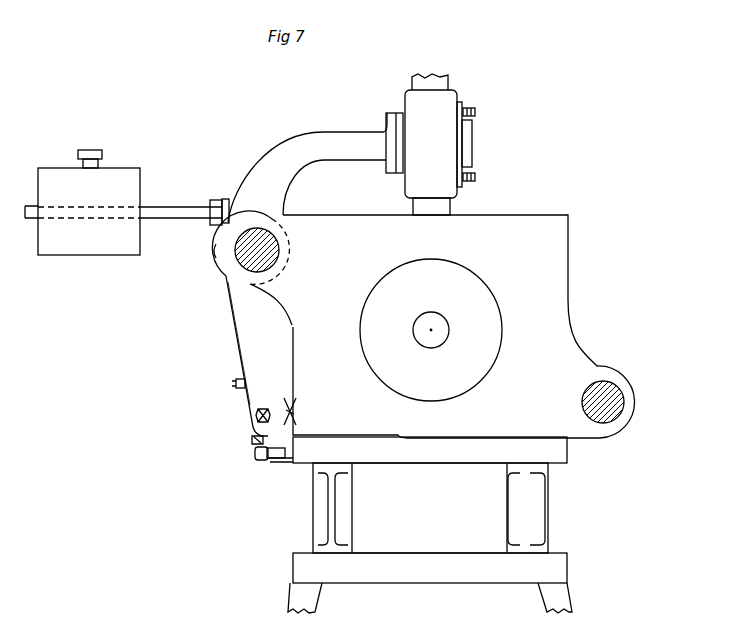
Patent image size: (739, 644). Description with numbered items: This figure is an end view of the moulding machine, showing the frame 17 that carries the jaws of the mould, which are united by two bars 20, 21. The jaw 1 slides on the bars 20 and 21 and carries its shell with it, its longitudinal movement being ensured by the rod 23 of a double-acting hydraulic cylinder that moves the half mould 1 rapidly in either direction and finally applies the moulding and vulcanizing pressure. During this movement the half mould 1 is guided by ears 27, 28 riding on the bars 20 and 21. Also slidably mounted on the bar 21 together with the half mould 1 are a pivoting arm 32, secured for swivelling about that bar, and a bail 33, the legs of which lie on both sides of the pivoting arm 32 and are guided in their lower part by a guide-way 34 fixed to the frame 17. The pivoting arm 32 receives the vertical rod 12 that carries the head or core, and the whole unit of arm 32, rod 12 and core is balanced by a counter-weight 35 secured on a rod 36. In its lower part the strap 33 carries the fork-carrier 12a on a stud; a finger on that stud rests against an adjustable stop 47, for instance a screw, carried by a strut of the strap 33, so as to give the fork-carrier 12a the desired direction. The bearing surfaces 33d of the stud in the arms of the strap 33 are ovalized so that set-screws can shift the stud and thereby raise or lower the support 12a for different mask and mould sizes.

The jaw 1 is at (548, 262).
The vertical rod 12 is at (437, 206).
The fork-carrier 12a is at (288, 500).
The frame 17 is at (527, 530).
The bar 20 is at (617, 412).
The bar 21 is at (210, 305).
The rod 23 is at (438, 332).
The ear 27 is at (207, 265).
The ear 28 is at (625, 388).
The pivoting arm 32 is at (343, 129).
The bail 33 is at (226, 345).
The bearing surfaces 33d is at (228, 422).
The guide-way 34 is at (228, 472).
The counter-weight 35 is at (107, 177).
The rod 36 is at (192, 197).
The adjustable stop 47 is at (210, 400).